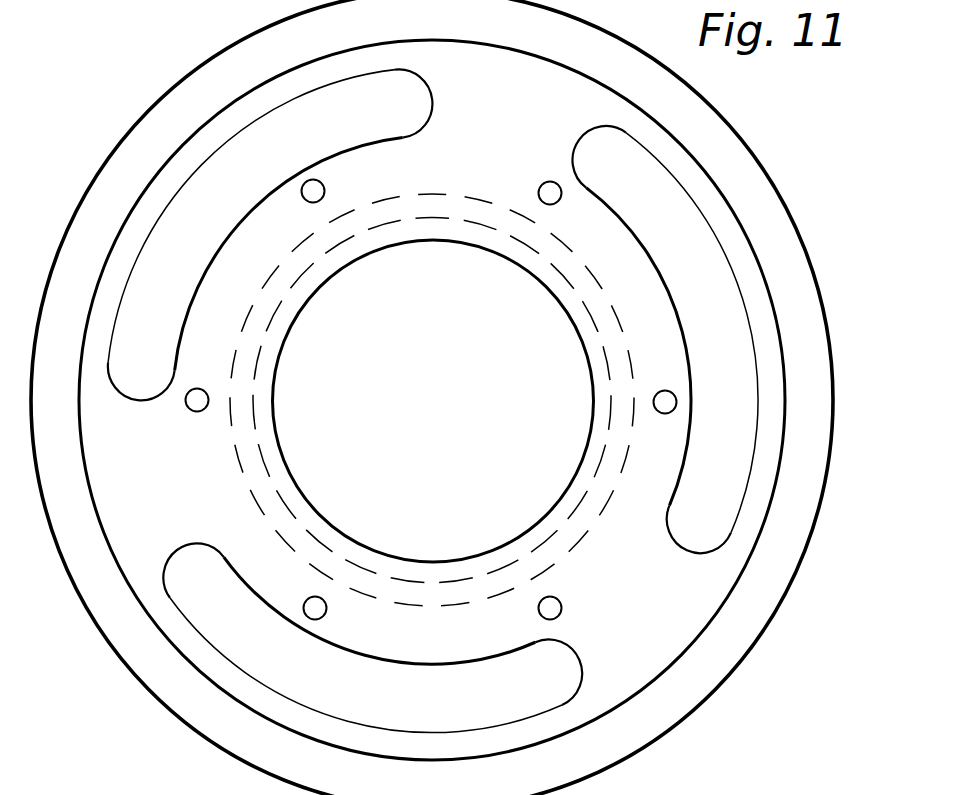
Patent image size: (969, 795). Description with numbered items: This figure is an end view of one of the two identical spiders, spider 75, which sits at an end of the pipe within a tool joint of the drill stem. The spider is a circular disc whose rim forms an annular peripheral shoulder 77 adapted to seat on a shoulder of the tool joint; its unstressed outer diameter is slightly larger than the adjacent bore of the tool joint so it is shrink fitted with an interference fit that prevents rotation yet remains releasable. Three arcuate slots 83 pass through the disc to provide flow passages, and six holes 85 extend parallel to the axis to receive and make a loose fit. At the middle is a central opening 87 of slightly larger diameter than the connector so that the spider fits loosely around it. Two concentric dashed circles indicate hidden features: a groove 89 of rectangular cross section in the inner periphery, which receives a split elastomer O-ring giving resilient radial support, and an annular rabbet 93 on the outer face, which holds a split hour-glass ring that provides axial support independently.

The spider 75 is at (794, 211).
The annular peripheral shoulder 77 is at (767, 590).
The arcuate slots 83 is at (251, 123).
The holes 85 is at (303, 191).
The central opening 87 is at (284, 458).
The groove 89 is at (282, 300).
The annular rabbet 93 is at (236, 362).